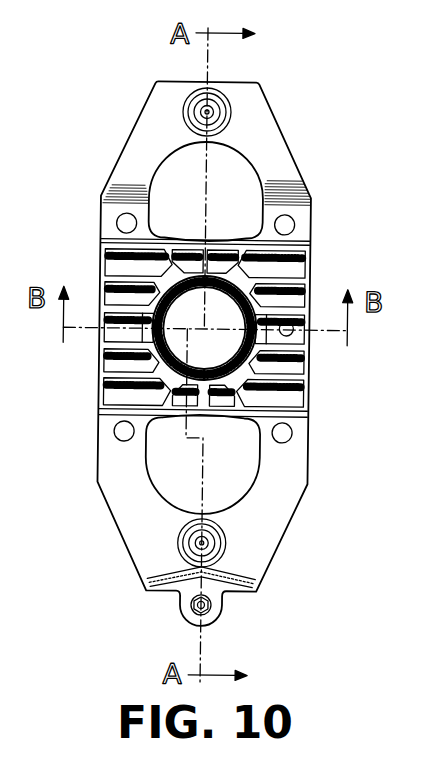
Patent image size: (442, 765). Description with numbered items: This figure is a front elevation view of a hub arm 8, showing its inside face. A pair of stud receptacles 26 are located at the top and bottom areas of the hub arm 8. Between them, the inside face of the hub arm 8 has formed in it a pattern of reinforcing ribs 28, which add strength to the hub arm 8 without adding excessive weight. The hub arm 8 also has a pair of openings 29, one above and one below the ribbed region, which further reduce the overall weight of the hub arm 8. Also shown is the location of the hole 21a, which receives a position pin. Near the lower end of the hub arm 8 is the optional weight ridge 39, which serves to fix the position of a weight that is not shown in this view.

The hub arm 8 is at (277, 524).
The hole 21a is at (291, 321).
The stud receptacles 26 is at (213, 109).
The reinforcing ribs 28 is at (300, 361).
The openings 29 is at (179, 170).
The weight ridge 39 is at (243, 590).